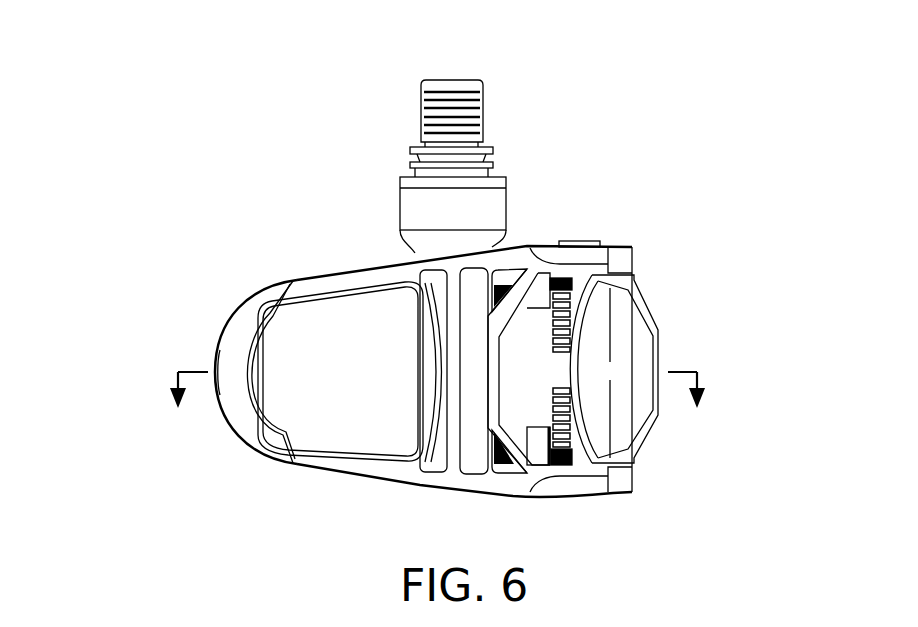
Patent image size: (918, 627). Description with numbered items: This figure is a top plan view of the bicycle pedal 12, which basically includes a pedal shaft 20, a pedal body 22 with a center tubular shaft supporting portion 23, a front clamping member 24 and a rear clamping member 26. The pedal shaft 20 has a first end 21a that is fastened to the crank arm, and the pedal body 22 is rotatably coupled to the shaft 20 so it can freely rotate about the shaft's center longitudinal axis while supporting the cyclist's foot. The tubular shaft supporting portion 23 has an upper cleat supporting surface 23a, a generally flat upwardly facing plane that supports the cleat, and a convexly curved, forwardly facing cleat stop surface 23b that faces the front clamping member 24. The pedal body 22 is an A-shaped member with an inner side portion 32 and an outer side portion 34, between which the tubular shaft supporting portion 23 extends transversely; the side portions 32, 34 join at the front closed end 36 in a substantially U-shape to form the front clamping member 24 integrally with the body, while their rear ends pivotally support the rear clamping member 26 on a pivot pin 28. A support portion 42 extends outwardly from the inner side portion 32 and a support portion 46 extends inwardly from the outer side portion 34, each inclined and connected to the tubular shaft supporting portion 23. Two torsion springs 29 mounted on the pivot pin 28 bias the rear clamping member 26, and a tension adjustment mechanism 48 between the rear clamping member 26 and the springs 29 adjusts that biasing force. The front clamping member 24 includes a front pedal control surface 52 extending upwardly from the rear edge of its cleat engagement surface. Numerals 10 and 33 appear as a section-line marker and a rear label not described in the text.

The section line 10 is at (438, 381).
The bicycle pedal 12 is at (606, 126).
The pedal shaft 20 is at (496, 125).
The first end 21a is at (483, 93).
The pedal body 22 is at (393, 498).
The tubular shaft supporting portion 23 is at (415, 243).
The upper cleat supporting surface 23a is at (430, 417).
The cleat stop surface 23b is at (422, 378).
The front clamping member 24 is at (214, 420).
The rear clamping member 26 is at (674, 326).
The pivot pin 28 is at (584, 240).
The torsion springs 29 is at (556, 390).
The inner side portion 32 is at (342, 280).
The rear end of pedal body 33 is at (602, 493).
The outer side portion 34 is at (358, 466).
The front closed end 36 is at (220, 335).
The support portion 42 is at (509, 317).
The support portion 46 is at (513, 420).
The tension adjustment mechanism 48 is at (500, 497).
The front pedal control surface 52 is at (258, 366).